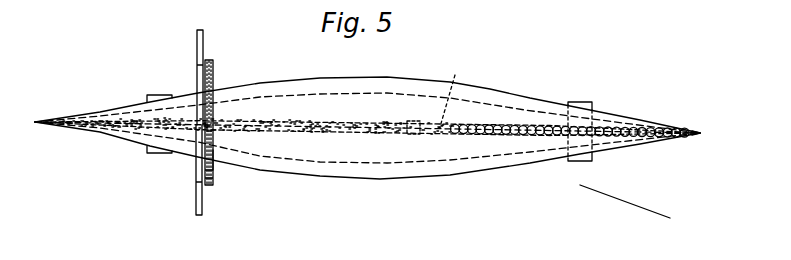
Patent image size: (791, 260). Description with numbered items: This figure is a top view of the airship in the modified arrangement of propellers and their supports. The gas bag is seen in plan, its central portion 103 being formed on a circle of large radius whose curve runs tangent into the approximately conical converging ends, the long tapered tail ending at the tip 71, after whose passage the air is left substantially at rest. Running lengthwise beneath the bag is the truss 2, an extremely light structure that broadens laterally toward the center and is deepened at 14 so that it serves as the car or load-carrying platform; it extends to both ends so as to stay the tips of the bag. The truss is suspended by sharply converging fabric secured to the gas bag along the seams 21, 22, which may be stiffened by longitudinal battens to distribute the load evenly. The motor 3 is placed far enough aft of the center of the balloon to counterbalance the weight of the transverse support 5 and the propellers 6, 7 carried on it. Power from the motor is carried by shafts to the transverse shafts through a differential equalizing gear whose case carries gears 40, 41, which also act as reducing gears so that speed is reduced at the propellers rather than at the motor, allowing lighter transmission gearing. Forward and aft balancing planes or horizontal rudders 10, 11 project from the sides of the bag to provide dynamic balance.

The truss 2 is at (500, 123).
The motor 3 is at (418, 140).
The transverse support 5 is at (213, 170).
The propeller 6 is at (197, 36).
The propeller 7 is at (197, 210).
The forward balancing plane 10 is at (151, 95).
The aft balancing plane 11 is at (588, 106).
The deepened portion of truss 14 is at (453, 93).
The seam 21 is at (288, 157).
The seam 22 is at (302, 96).
The reducing gear 40 is at (213, 68).
The reducing gear 41 is at (209, 186).
The tip 71 is at (702, 124).
The central portion 103 is at (373, 76).